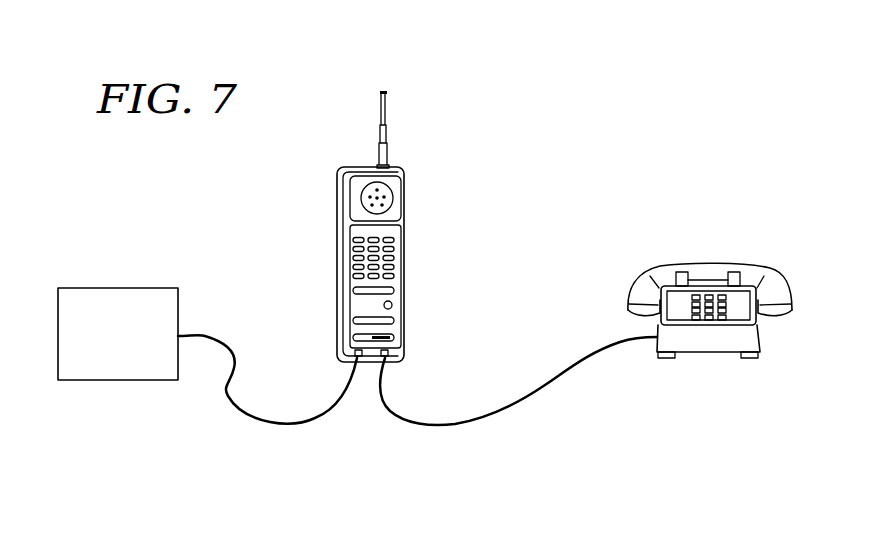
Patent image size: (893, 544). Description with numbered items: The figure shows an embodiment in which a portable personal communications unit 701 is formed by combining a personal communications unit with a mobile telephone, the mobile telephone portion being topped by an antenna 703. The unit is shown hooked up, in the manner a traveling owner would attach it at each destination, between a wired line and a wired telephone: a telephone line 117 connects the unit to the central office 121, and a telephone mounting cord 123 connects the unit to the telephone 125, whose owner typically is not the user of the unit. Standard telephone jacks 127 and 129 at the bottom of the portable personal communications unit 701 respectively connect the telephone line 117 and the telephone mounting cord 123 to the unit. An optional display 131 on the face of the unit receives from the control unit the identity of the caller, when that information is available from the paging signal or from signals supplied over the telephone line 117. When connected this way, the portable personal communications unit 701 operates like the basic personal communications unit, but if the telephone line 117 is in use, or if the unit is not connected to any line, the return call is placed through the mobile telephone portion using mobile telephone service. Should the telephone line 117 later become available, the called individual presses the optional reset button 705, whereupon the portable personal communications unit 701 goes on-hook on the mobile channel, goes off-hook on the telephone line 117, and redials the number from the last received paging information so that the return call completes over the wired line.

The telephone line 117 is at (251, 422).
The central office 121 is at (112, 288).
The telephone mounting cord 123 is at (557, 380).
The telephone 125 is at (711, 264).
The PJ-11 jack 127 is at (342, 357).
The PJ-11 jack 129 is at (404, 353).
The display 131 is at (353, 289).
The portable personal communications unit 701 is at (375, 237).
The antenna 703 is at (385, 130).
The reset button 705 is at (393, 303).